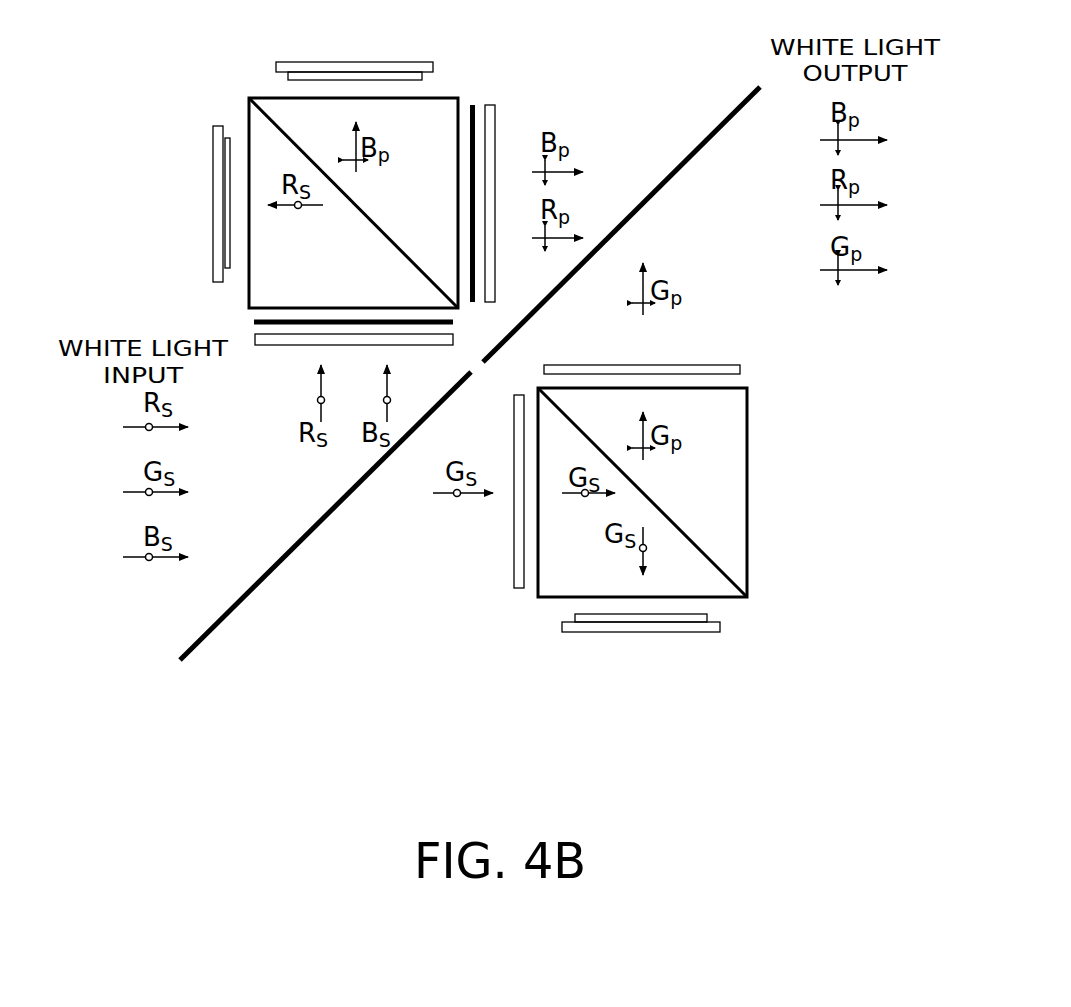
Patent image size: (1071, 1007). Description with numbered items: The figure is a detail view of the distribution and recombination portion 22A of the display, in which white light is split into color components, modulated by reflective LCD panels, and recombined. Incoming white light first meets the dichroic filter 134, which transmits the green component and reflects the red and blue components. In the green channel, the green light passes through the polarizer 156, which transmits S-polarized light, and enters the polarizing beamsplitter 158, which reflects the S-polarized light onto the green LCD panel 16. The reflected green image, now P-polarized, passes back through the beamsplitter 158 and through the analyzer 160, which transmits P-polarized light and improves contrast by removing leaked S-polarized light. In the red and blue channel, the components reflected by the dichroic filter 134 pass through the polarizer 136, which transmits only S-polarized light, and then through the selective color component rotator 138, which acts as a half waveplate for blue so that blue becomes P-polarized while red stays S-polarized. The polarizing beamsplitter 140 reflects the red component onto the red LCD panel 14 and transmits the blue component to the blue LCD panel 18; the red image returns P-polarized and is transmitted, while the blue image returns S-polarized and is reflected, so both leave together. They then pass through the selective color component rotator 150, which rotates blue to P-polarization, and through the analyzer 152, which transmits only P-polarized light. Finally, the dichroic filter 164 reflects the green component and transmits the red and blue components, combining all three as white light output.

The red LCD panel 14 is at (161, 204).
The green LCD panel 16 is at (641, 651).
The blue LCD panel 18 is at (354, 45).
The distribution and recombination portion 22A is at (749, 730).
The dichroic filter 134 is at (210, 633).
The polarizer 136 is at (255, 338).
The selective color component rotator 138 is at (255, 322).
The polarizing beamsplitter 140 is at (249, 98).
The selective color component rotator 150 is at (473, 105).
The analyzer 152 is at (490, 105).
The polarizer 156 is at (517, 590).
The polarizing beamsplitter 158 is at (747, 447).
The analyzer 160 is at (742, 367).
The dichroic filter 164 is at (738, 108).